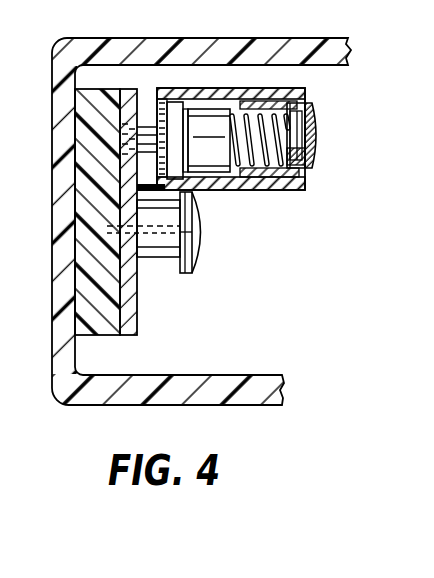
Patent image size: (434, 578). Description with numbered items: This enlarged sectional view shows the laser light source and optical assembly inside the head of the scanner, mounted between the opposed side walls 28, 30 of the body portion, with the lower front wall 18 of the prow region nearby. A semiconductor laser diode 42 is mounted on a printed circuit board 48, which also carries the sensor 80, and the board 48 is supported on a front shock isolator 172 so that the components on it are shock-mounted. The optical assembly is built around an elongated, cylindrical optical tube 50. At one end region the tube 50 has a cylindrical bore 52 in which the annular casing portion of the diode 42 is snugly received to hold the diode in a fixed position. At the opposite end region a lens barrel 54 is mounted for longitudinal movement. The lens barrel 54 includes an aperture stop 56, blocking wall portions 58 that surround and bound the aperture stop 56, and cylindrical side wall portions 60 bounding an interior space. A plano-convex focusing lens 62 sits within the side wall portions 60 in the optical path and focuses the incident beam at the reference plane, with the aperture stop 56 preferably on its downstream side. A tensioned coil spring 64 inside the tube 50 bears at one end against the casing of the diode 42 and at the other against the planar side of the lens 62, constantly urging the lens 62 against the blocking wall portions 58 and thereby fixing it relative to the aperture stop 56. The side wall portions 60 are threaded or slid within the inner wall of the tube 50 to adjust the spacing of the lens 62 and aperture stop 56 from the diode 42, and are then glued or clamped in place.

The lower front wall 18 is at (62, 57).
The side wall 28 is at (215, 398).
The side wall 30 is at (273, 44).
The semiconductor laser diode 42 is at (206, 110).
The printed circuit board 48 is at (128, 100).
The optical tube 50 is at (278, 135).
The cylindrical bore 52 is at (175, 103).
The lens barrel 54 is at (302, 180).
The aperture stop 56 is at (317, 135).
The blocking wall portions 58 is at (317, 114).
The cylindrical side wall portions 60 is at (312, 102).
The focusing lens 62 is at (289, 194).
The coil spring 64 is at (304, 158).
The sensor 80 is at (156, 258).
The front shock isolator 172 is at (118, 337).